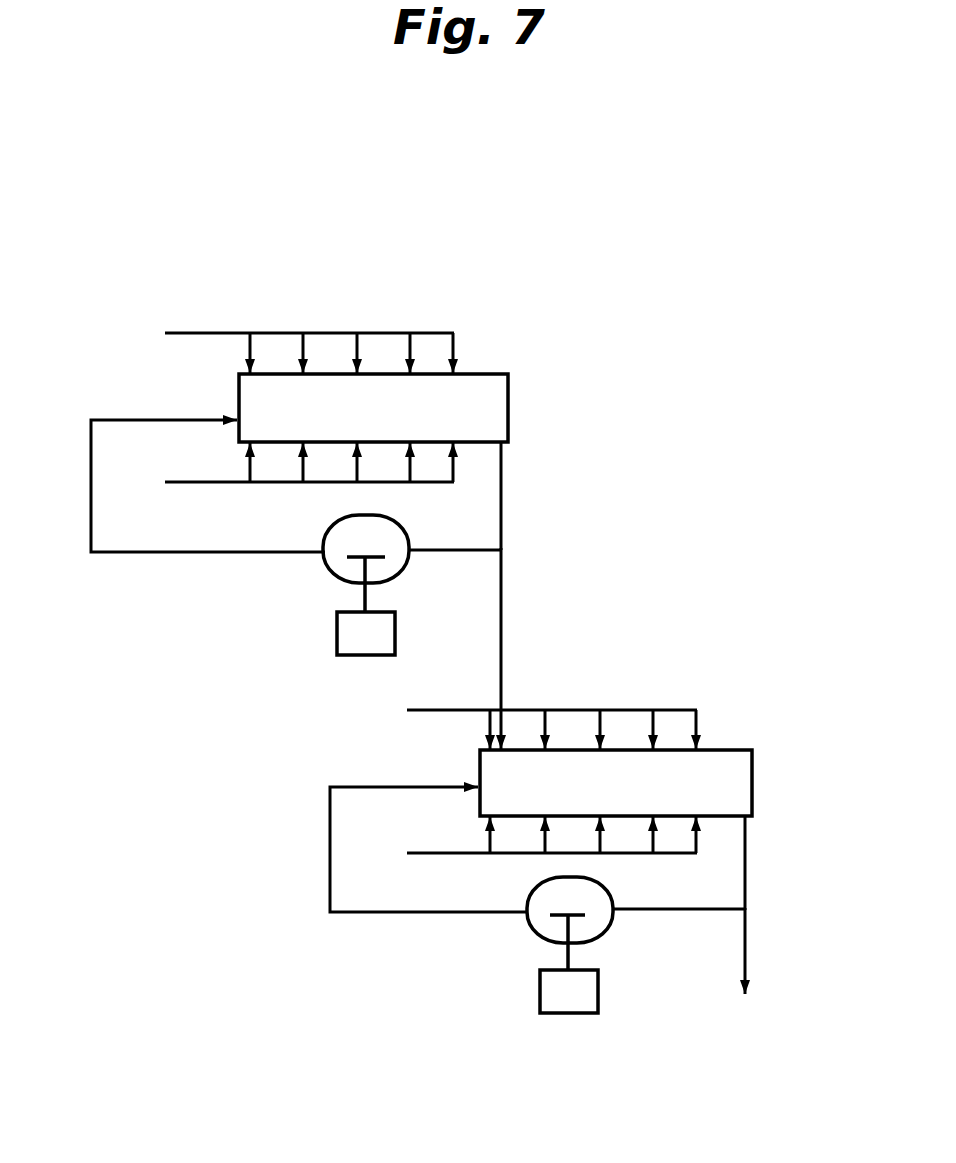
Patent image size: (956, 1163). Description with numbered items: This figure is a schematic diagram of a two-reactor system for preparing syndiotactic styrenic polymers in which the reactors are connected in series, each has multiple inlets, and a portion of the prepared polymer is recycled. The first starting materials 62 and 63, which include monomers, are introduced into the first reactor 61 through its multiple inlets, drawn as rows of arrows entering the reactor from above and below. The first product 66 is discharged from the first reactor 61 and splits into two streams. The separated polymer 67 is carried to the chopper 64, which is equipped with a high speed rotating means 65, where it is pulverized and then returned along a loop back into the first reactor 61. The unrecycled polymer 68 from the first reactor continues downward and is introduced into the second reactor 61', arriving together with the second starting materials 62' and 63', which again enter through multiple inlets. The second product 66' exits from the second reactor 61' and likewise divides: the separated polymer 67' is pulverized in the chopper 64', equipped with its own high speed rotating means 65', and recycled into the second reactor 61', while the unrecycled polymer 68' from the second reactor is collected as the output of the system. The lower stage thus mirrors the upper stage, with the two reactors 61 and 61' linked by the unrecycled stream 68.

The first reactor 61 is at (407, 389).
The first starting material 62 is at (287, 472).
The first starting material 63 is at (289, 348).
The chopper 64 is at (324, 579).
The high speed rotating means 65 is at (320, 664).
The first product 66 is at (547, 496).
The separated polymer 67 is at (296, 515).
The unrecycled polymer 68 is at (539, 648).
The second reactor 61' is at (657, 749).
The second starting material 62' is at (526, 845).
The second starting material 63' is at (526, 724).
The chopper 64' is at (520, 932).
The high speed rotating means 65' is at (521, 1022).
The second product 66' is at (782, 863).
The separated polymer 67' is at (538, 849).
The unrecycled polymer 68' is at (782, 951).